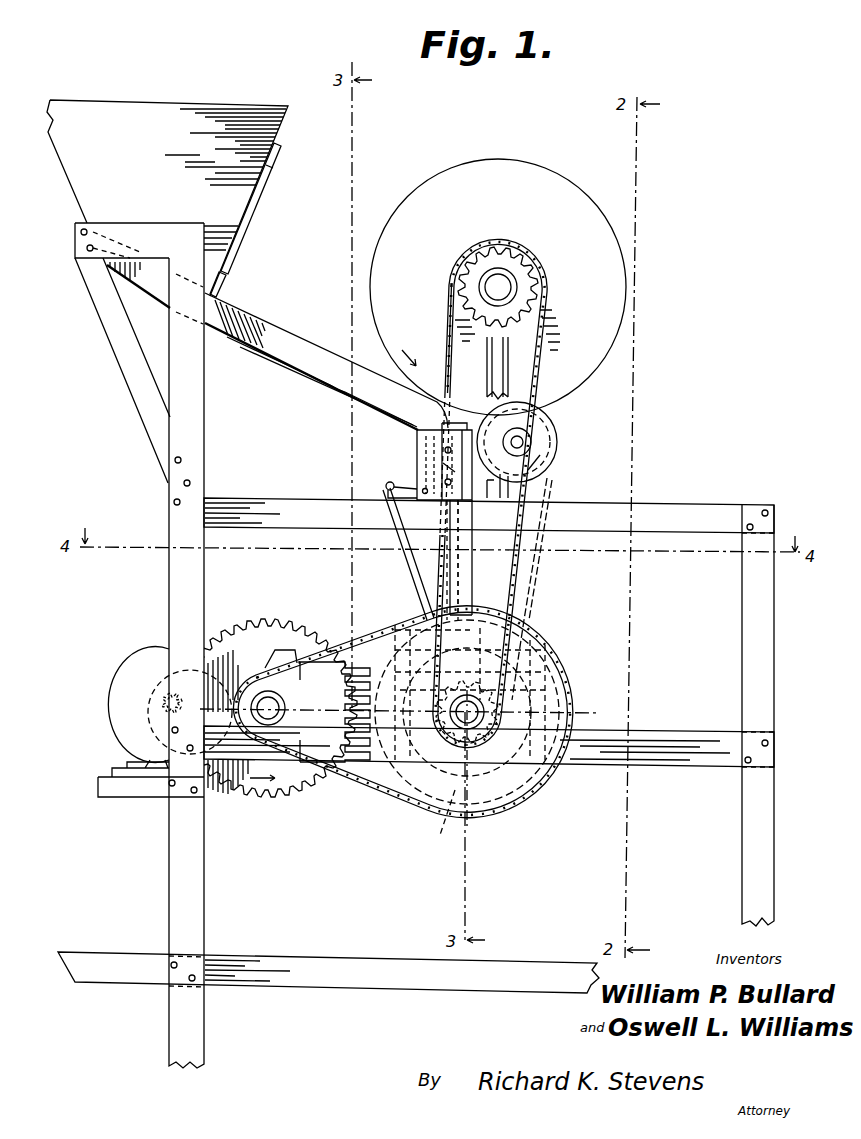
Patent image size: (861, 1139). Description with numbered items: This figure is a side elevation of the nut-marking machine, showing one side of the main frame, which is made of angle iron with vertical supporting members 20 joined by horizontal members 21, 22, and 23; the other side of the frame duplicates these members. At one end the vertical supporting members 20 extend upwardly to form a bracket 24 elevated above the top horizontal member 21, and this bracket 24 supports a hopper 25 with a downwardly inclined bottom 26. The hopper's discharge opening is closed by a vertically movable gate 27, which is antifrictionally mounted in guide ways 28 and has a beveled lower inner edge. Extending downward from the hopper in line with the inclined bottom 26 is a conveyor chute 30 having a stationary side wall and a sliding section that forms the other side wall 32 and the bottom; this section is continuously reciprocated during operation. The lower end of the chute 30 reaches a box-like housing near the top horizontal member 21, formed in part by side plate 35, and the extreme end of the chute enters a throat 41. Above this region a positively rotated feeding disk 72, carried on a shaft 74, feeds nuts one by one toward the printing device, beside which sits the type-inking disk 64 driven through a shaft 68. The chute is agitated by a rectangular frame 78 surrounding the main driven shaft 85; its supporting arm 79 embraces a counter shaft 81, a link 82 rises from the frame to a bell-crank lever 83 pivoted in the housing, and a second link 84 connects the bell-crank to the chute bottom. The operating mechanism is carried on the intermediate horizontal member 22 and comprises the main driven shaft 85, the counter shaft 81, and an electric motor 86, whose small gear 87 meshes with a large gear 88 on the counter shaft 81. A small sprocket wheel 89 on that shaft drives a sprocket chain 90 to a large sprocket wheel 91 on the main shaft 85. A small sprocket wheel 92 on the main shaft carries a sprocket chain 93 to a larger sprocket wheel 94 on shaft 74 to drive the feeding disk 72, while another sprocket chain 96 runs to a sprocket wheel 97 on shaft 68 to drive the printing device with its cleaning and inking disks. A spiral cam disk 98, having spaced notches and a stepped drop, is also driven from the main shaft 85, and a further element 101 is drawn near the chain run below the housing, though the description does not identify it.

The vertical supporting members 20 is at (204, 580).
The top horizontal member 21 is at (672, 510).
The intermediate horizontal member 22 is at (660, 740).
The horizontal member 23 is at (372, 962).
The bracket 24 is at (128, 238).
The hopper 25 is at (278, 135).
The downwardly inclined bottom 26 is at (158, 300).
The gate 27 is at (222, 285).
The guide ways 28 is at (254, 230).
The conveyor chute 30 is at (297, 334).
The side wall 32 is at (332, 382).
The side plate 35 is at (417, 452).
The throat 41 is at (469, 423).
The type-inking disk 64 is at (557, 435).
The shaft 68 is at (531, 436).
The feeding disk 72 is at (469, 170).
The shaft 74 is at (512, 283).
The rectangular frame 78 is at (560, 668).
The supporting arm 79 is at (328, 650).
The counter shaft 81 is at (266, 704).
The link 82 is at (412, 590).
The bell-crank lever 83 is at (394, 481).
The second link 84 is at (353, 406).
The main driven shaft 85 is at (470, 714).
The electric motor 86 is at (124, 722).
The small gear 87 is at (163, 702).
The large gear 88 is at (273, 622).
The small sprocket wheel 89 is at (298, 705).
The sprocket chain 90 is at (360, 790).
The large sprocket wheel 91 is at (522, 797).
The small sprocket wheel 92 is at (486, 776).
The sprocket chain 93 is at (546, 372).
The sprocket wheel 94 is at (448, 282).
The sprocket chain 96 is at (534, 580).
The sprocket wheel 97 is at (555, 455).
The spiral cam disk 98 is at (445, 821).
The link 101 is at (474, 600).